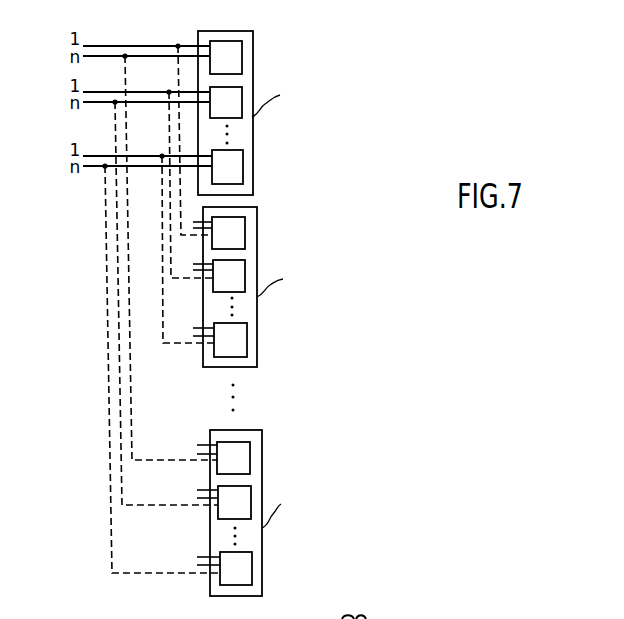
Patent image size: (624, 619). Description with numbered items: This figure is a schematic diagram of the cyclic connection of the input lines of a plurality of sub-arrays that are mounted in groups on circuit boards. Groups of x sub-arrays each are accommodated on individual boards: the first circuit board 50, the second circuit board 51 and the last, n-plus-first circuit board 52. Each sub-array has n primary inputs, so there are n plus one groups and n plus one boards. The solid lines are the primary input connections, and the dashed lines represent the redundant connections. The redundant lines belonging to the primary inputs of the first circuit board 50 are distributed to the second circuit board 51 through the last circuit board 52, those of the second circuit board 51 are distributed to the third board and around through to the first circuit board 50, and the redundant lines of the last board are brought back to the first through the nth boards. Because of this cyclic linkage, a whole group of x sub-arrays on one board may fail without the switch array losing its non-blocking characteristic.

The first circuit board 50 is at (249, 47).
The second circuit board 51 is at (258, 226).
The (n+1)th circuit board 52 is at (262, 455).